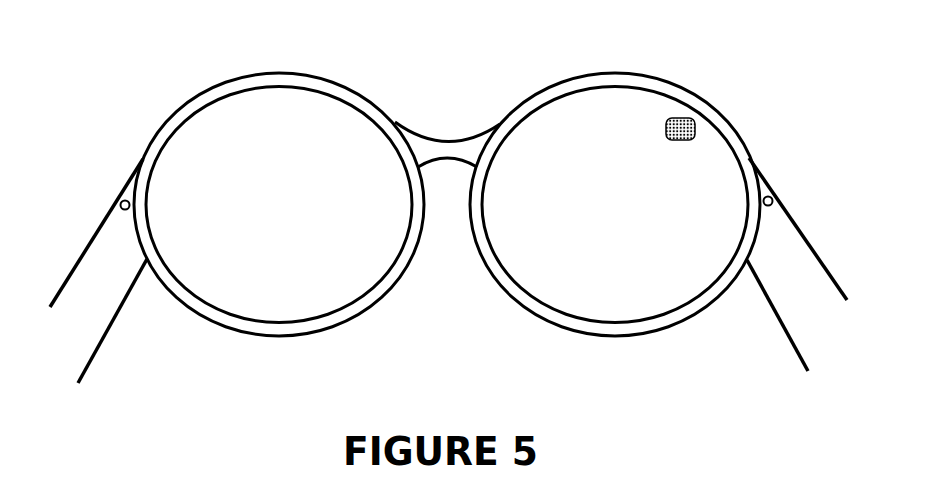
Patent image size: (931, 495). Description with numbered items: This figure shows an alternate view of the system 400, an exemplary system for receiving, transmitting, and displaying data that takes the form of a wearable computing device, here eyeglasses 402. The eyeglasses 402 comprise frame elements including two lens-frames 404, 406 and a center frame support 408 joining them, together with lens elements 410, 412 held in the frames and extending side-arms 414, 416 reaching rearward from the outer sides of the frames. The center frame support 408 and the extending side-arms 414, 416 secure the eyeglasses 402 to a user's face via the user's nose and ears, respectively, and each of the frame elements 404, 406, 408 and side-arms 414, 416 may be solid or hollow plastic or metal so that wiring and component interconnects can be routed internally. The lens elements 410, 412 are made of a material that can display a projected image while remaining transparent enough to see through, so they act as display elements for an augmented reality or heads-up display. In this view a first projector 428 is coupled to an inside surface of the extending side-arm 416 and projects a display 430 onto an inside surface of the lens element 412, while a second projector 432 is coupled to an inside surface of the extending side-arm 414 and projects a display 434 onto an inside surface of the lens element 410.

The system 400 is at (714, 410).
The eyeglasses 402 is at (160, 74).
The lens-frame 404 is at (702, 313).
The lens-frame 406 is at (172, 296).
The center frame support 408 is at (436, 140).
The lens element 410 is at (618, 303).
The lens element 412 is at (290, 305).
The extending side-arm 414 is at (792, 218).
The extending side-arm 416 is at (104, 222).
The first projector 428 is at (126, 199).
The display 430 is at (257, 124).
The second projector 432 is at (767, 196).
The display 434 is at (690, 143).